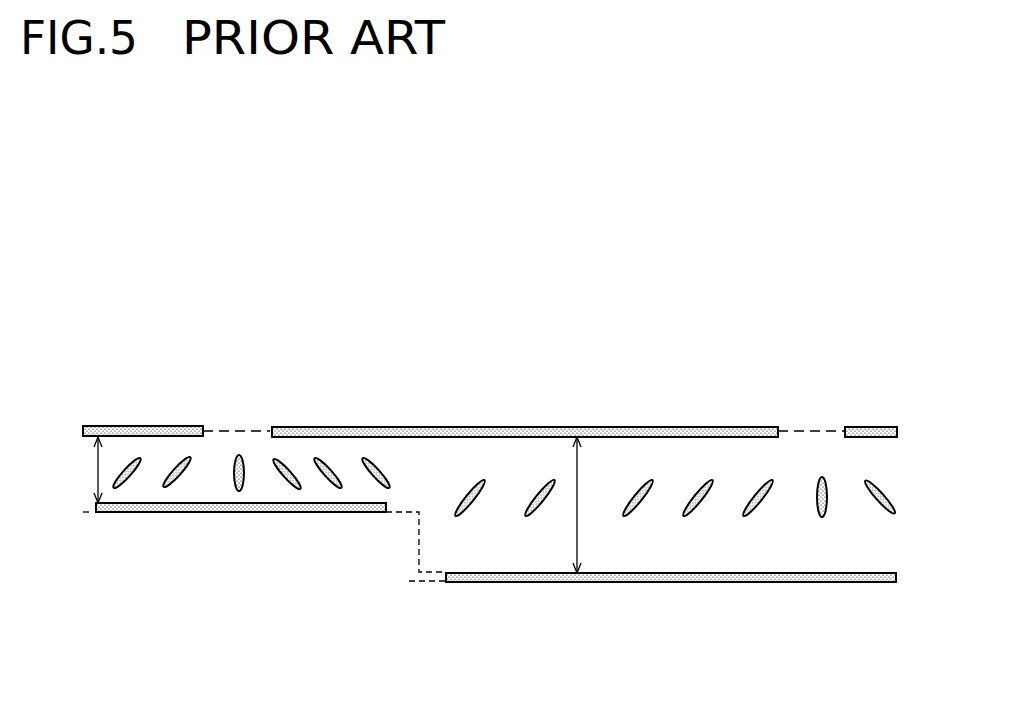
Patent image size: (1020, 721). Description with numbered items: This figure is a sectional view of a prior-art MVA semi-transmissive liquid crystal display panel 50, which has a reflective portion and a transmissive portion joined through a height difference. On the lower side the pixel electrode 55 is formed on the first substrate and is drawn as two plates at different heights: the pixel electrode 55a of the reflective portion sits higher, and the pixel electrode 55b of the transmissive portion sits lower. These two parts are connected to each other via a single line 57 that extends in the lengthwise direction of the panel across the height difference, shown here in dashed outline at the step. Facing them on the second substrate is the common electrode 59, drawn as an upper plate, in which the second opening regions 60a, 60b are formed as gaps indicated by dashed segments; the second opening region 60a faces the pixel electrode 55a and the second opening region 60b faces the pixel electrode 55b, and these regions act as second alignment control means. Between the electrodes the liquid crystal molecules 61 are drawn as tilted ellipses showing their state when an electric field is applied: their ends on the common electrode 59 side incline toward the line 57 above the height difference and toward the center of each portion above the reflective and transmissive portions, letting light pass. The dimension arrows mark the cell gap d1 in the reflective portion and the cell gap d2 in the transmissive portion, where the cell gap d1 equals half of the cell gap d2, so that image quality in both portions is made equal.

The semi-transmissive liquid crystal display panel 50 is at (123, 290).
The pixel electrode 55 is at (489, 602).
The pixel electrode formed in the reflective portion 55a is at (282, 512).
The pixel electrode formed in the transmissive portion 55b is at (446, 582).
The line 57 is at (419, 537).
The common electrode 59 is at (437, 427).
The second opening region 60a is at (255, 431).
The second opening region 60b is at (825, 431).
The liquid crystal molecules 61 is at (828, 507).
The cell gap in the reflective portion d1 is at (82, 470).
The cell gap in the transmissive portion d2 is at (592, 505).